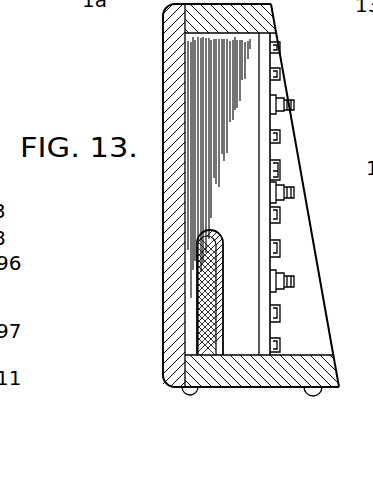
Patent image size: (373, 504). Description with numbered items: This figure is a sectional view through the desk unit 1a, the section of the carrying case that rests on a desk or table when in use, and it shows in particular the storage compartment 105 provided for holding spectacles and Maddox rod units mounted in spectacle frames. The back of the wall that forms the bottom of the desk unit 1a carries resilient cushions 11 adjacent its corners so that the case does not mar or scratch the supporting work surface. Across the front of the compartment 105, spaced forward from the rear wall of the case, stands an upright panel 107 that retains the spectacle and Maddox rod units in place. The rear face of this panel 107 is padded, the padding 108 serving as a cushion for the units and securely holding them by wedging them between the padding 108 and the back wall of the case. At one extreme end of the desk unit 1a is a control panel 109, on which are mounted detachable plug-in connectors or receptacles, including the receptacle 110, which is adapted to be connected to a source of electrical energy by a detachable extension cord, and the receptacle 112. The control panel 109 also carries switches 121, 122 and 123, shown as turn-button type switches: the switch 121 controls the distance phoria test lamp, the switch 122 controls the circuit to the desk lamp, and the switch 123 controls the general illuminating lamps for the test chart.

The desk unit 1a is at (162, 331).
The resilient cushions 11 is at (282, 173).
The compartment 105 is at (198, 222).
The upright panel 107 is at (217, 283).
The padding 108 is at (205, 258).
The control panel 109 is at (297, 194).
The receptacle 110 is at (284, 81).
The receptacle 112 is at (318, 244).
The switch 121 is at (295, 104).
The switch 122 is at (295, 193).
The switch 123 is at (295, 283).